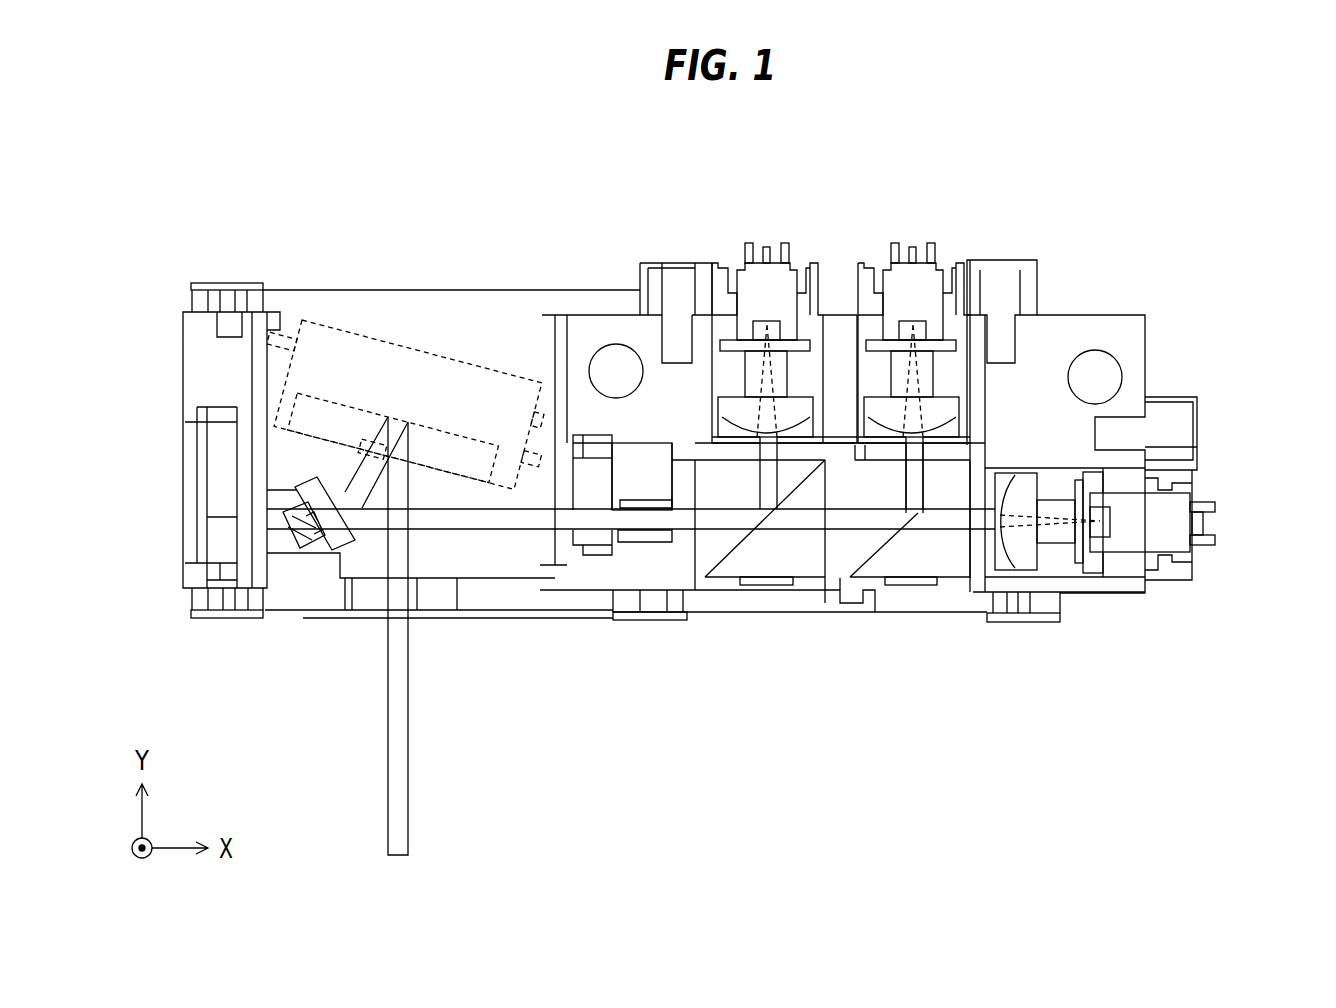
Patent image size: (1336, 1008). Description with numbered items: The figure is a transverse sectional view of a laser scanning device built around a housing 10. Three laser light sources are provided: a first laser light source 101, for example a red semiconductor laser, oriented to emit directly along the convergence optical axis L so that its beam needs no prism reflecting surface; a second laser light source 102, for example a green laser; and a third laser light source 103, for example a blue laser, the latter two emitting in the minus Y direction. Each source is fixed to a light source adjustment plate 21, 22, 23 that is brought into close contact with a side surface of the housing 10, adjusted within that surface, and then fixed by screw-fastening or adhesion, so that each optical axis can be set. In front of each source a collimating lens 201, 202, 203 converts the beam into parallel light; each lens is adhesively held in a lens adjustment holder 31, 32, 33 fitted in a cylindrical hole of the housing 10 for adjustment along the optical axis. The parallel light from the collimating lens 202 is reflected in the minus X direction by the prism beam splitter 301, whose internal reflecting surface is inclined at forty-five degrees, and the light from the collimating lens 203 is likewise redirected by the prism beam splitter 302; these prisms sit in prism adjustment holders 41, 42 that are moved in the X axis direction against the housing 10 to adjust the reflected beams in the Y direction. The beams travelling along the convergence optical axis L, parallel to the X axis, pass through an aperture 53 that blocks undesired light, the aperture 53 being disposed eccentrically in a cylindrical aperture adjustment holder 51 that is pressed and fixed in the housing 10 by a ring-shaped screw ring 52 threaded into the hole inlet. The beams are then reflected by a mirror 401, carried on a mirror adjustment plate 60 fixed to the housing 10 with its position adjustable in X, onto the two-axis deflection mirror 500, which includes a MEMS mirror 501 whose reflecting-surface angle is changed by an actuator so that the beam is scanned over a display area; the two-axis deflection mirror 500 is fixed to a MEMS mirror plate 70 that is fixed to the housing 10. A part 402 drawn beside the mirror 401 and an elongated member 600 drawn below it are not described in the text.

The housing 10 is at (1047, 390).
The light source adjustment plate 21 is at (1173, 577).
The light source adjustment plate 22 is at (853, 272).
The light source adjustment plate 23 is at (822, 275).
The lens adjustment holder 31 is at (1067, 560).
The lens adjustment holder 32 is at (957, 362).
The lens adjustment holder 33 is at (730, 383).
The prism adjustment holder 41 is at (962, 603).
The prism adjustment holder 42 is at (722, 597).
The aperture adjustment holder 51 is at (642, 472).
The screw ring 52 is at (590, 475).
The aperture 53 is at (592, 548).
The mirror adjustment plate 60 is at (328, 598).
The MEMS mirror plate 70 is at (402, 323).
The first laser light source 101 is at (1160, 520).
The second laser light source 102 is at (912, 282).
The third laser light source 103 is at (757, 282).
The collimating lens 201 is at (1025, 548).
The collimating lens 202 is at (943, 407).
The collimating lens 203 is at (743, 407).
The prism beam splitter 301 is at (908, 555).
The prism beam splitter 302 is at (792, 548).
The mirror 401 is at (330, 528).
The mirror holder 402 is at (302, 530).
The two-axis deflection mirror 500 is at (408, 372).
The MEMS mirror 501 is at (397, 410).
The lever 600 is at (438, 612).
The convergence optical axis L is at (485, 515).